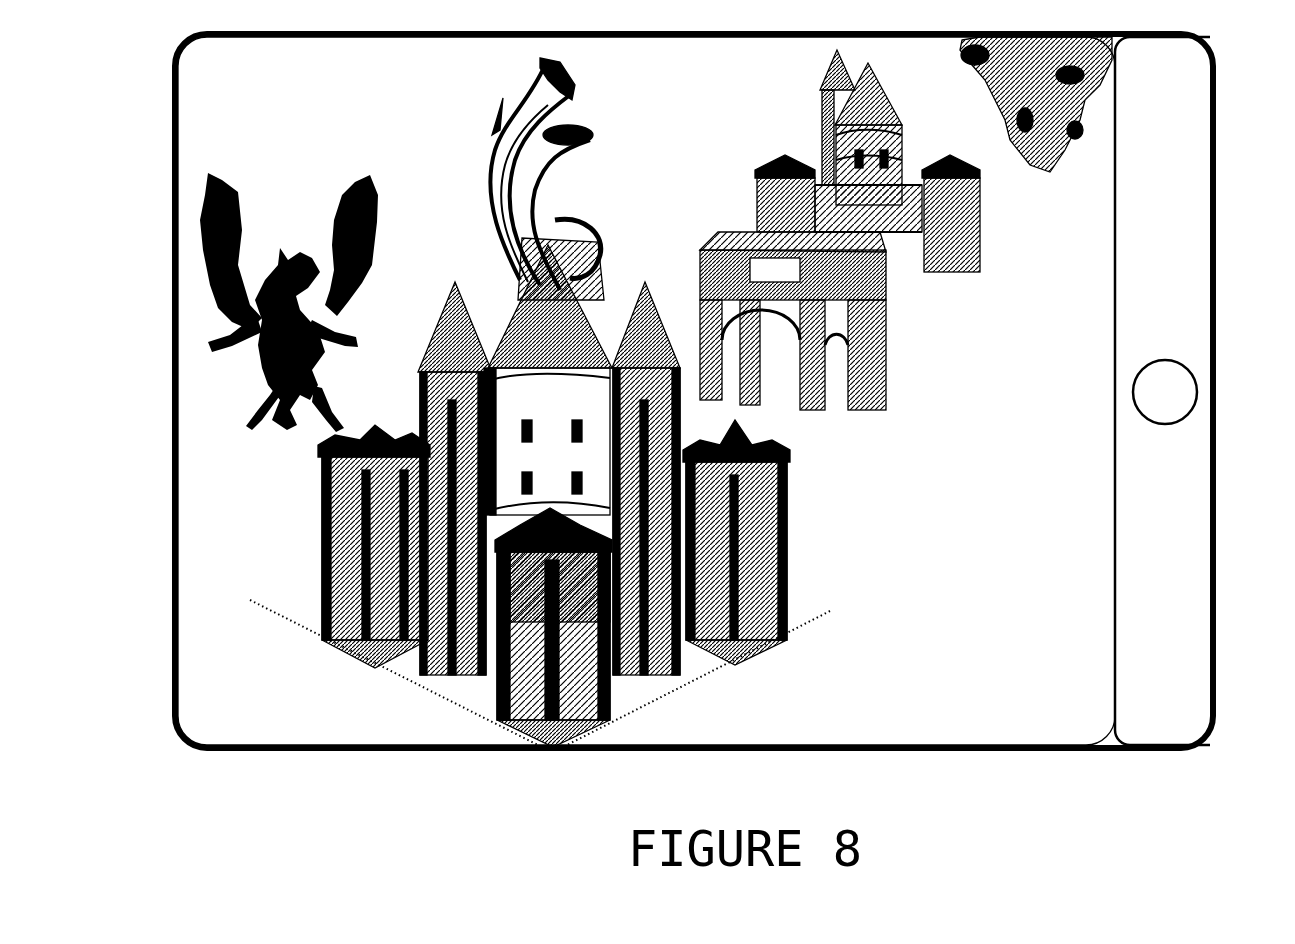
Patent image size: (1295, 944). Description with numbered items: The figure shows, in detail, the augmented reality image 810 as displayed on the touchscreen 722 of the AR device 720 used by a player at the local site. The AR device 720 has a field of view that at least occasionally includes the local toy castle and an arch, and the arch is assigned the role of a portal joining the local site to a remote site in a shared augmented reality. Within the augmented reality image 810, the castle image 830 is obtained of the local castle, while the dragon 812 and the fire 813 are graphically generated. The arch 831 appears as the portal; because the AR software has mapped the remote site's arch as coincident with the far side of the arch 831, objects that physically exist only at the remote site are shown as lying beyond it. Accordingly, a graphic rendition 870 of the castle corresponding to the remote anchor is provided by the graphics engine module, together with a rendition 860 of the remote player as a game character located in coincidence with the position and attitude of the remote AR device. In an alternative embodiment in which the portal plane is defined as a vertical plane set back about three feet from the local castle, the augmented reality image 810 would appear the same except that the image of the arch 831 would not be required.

The AR device 720 is at (1215, 300).
The touchscreen 722 is at (198, 123).
The augmented reality image 810 is at (268, 701).
The dragon 812 is at (345, 198).
The fire 813 is at (592, 135).
The castle image 830 is at (325, 530).
The arch 831 is at (715, 232).
The rendition of player 860 is at (975, 70).
The graphic rendition of castle 870 is at (828, 76).